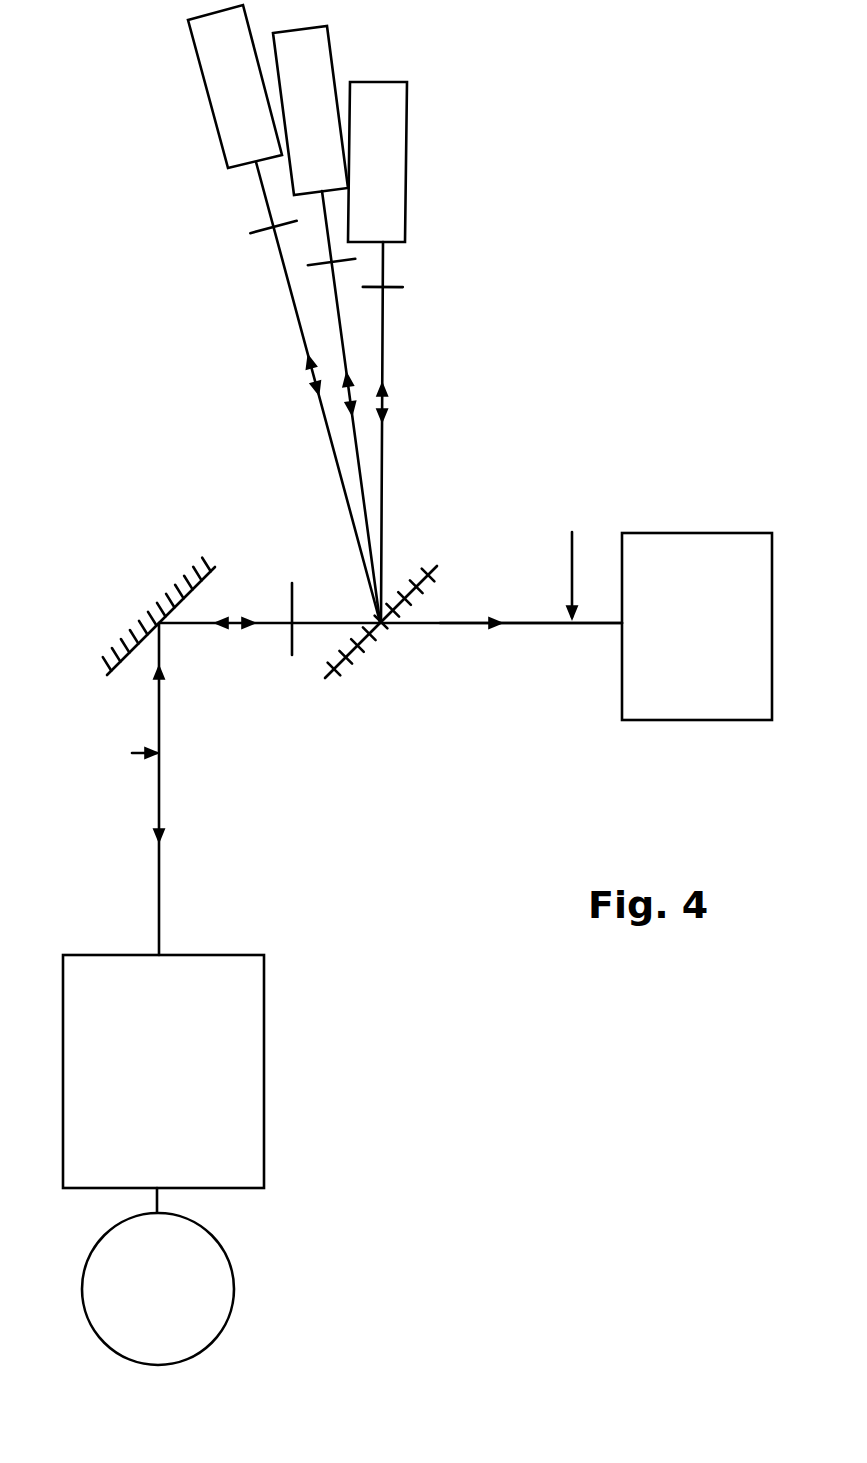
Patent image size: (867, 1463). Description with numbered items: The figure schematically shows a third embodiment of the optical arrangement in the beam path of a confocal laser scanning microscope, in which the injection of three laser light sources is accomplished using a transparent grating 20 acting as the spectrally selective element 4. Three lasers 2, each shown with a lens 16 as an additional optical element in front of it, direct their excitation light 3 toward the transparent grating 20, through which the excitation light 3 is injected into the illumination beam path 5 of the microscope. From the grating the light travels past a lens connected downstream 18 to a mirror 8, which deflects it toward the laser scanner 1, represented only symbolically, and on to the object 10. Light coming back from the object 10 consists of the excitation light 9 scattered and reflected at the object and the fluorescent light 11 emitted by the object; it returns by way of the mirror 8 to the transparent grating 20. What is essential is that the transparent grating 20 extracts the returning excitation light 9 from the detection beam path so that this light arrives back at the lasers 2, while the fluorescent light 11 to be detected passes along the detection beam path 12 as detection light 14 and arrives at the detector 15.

The laser scanner 1 is at (264, 1117).
The lasers 2 is at (223, 138).
The excitation light 3 is at (300, 315).
The spectrally selective element 4 is at (357, 648).
The illumination beam path 5 is at (130, 755).
The mirror 8 is at (170, 590).
The excitation light returning from the object 9 is at (389, 787).
The object 10 is at (158, 1276).
The fluorescent light 11 is at (182, 625).
The detection beam path 12 is at (573, 546).
The detection light 14 is at (465, 618).
The detector 15 is at (700, 722).
The lenses 16 is at (262, 229).
The lens connected downstream 18 is at (297, 588).
The transparent grating 20 is at (395, 662).